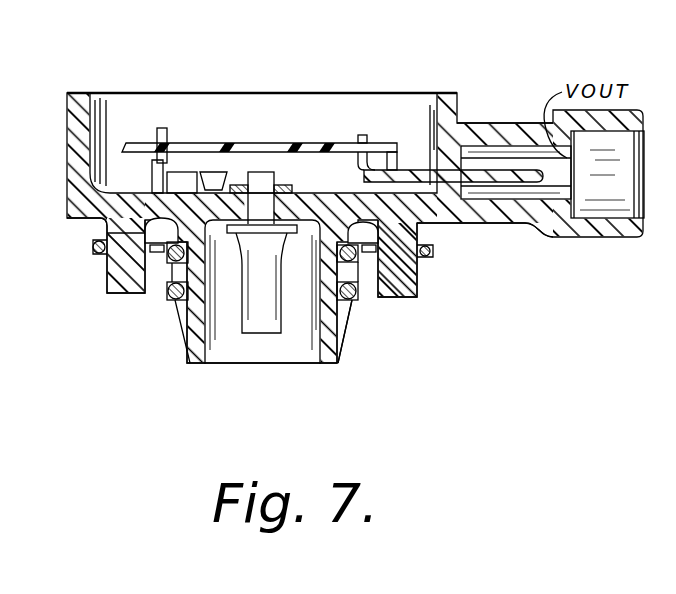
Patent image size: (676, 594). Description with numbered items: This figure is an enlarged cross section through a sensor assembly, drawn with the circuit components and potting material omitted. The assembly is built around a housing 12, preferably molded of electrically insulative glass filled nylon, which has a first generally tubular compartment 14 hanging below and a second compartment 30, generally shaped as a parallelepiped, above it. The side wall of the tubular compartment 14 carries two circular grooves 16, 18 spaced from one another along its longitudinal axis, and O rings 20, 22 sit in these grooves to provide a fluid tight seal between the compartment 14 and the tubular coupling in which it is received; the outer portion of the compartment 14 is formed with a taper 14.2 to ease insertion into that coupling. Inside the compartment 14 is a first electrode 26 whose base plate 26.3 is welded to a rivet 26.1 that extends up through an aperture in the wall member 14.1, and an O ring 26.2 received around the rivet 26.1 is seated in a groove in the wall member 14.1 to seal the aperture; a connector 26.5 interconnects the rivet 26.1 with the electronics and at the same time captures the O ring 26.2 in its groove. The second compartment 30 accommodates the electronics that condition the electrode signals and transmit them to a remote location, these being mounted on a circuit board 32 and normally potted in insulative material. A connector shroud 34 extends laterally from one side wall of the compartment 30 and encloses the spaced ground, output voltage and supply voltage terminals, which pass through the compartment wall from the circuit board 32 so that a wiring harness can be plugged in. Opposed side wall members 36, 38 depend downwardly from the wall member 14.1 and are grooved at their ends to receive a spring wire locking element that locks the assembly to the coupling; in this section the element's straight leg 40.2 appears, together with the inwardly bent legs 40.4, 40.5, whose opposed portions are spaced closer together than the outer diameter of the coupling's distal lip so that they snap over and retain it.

The housing 12 is at (62, 108).
The first generally tubular compartment 14 is at (313, 350).
The wall member 14.1 is at (336, 195).
The taper 14.2 is at (320, 351).
The circular groove 16 is at (350, 263).
The circular groove 18 is at (353, 300).
The O ring 20 is at (173, 259).
The O ring 22 is at (173, 292).
The first electrode 26 is at (252, 315).
The rivet 26.1 is at (272, 194).
The O ring 26.2 is at (243, 171).
The base plate 26.3 is at (262, 299).
The connector 26.5 is at (217, 188).
The second compartment 30 is at (147, 107).
The circuit board 32 is at (304, 141).
The connector shroud 34 is at (522, 224).
The side wall member 36 is at (107, 283).
The side wall member 38 is at (413, 278).
The leg of spring wire locking element 40.2 is at (155, 234).
The leg of spring wire locking element 40.4 is at (93, 248).
The leg of spring wire locking element 40.5 is at (435, 249).